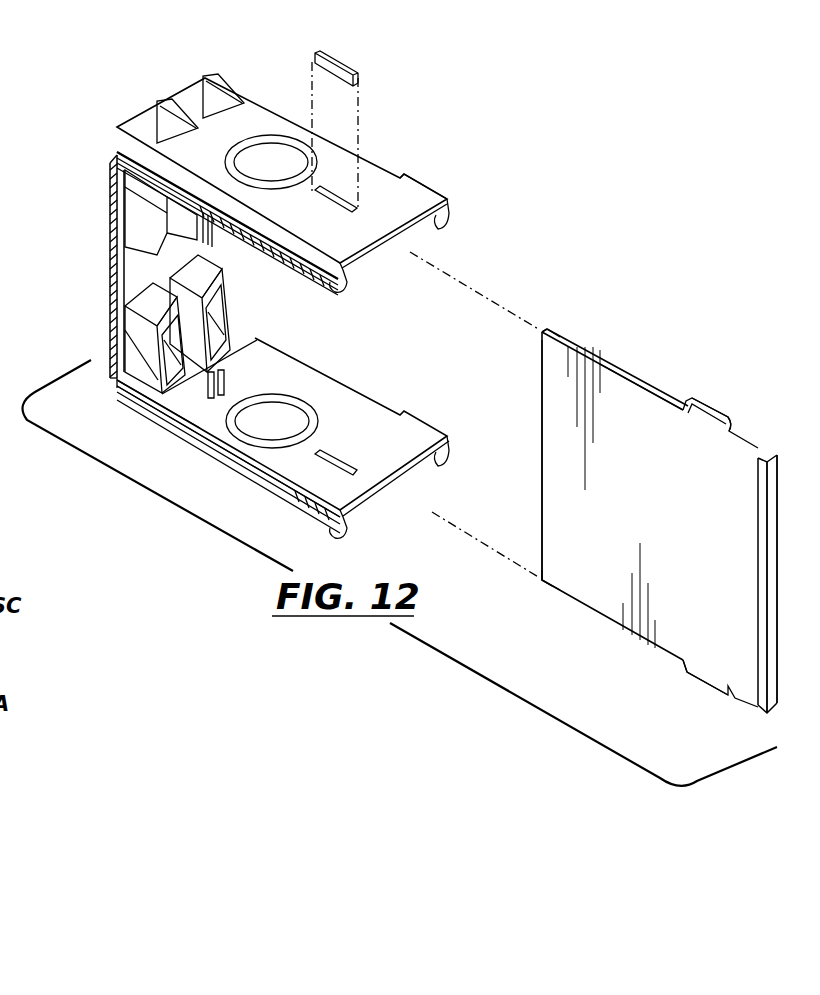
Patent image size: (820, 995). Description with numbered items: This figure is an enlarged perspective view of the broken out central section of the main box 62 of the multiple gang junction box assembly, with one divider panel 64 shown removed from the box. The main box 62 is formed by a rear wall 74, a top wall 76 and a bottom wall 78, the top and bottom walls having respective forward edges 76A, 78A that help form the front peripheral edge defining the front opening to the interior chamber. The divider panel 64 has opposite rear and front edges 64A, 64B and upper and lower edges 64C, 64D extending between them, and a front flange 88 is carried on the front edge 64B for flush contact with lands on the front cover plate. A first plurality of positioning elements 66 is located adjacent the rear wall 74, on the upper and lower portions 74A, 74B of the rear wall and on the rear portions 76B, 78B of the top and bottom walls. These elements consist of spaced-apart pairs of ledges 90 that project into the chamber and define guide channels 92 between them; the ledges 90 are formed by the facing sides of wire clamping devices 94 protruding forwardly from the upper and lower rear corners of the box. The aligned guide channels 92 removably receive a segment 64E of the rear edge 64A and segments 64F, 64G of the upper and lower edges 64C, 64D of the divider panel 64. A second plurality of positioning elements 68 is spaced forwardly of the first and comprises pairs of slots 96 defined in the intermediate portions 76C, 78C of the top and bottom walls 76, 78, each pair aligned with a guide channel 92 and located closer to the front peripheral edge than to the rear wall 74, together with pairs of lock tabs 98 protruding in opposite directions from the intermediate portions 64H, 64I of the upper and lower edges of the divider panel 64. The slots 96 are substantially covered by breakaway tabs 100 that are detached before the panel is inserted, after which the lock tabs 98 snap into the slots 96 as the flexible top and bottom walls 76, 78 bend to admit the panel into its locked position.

The main box 62 is at (244, 85).
The divider panel 64 is at (632, 358).
The rear edge 64A is at (542, 370).
The front edge 64B is at (766, 524).
The upper edge 64C is at (657, 387).
The lower edge 64D is at (617, 627).
The segment of the rear edge 64E is at (542, 338).
The segment of the upper edge 64F is at (560, 360).
The segment of the lower edge 64G is at (550, 582).
The intermediate portion of the upper edge 64H is at (702, 460).
The intermediate portion of the lower edge 64I is at (710, 647).
The first plurality of positioning elements 66 is at (236, 402).
The second plurality of positioning elements 68 is at (341, 193).
The rear wall 74 is at (110, 300).
The upper portion of the rear wall 74A is at (113, 183).
The lower portion of the rear wall 74B is at (110, 342).
The top wall 76 is at (250, 122).
The forward edge of the top wall 76A is at (415, 232).
The rear portion of the top wall 76B is at (207, 120).
The intermediate portion of the top wall 76C is at (340, 233).
The bottom wall 78 is at (400, 460).
The forward edge of the bottom wall 78A is at (420, 487).
The rear portion of the bottom wall 78B is at (218, 420).
The intermediate portion of the bottom wall 78C is at (302, 480).
The front flange 88 is at (767, 596).
The ledge 90 is at (195, 370).
The guide channel 92 is at (222, 319).
The wire clamping device 94 is at (133, 192).
The slot 96 is at (112, 158).
The lock tab 98 is at (117, 390).
The breakaway tab 100 is at (337, 62).